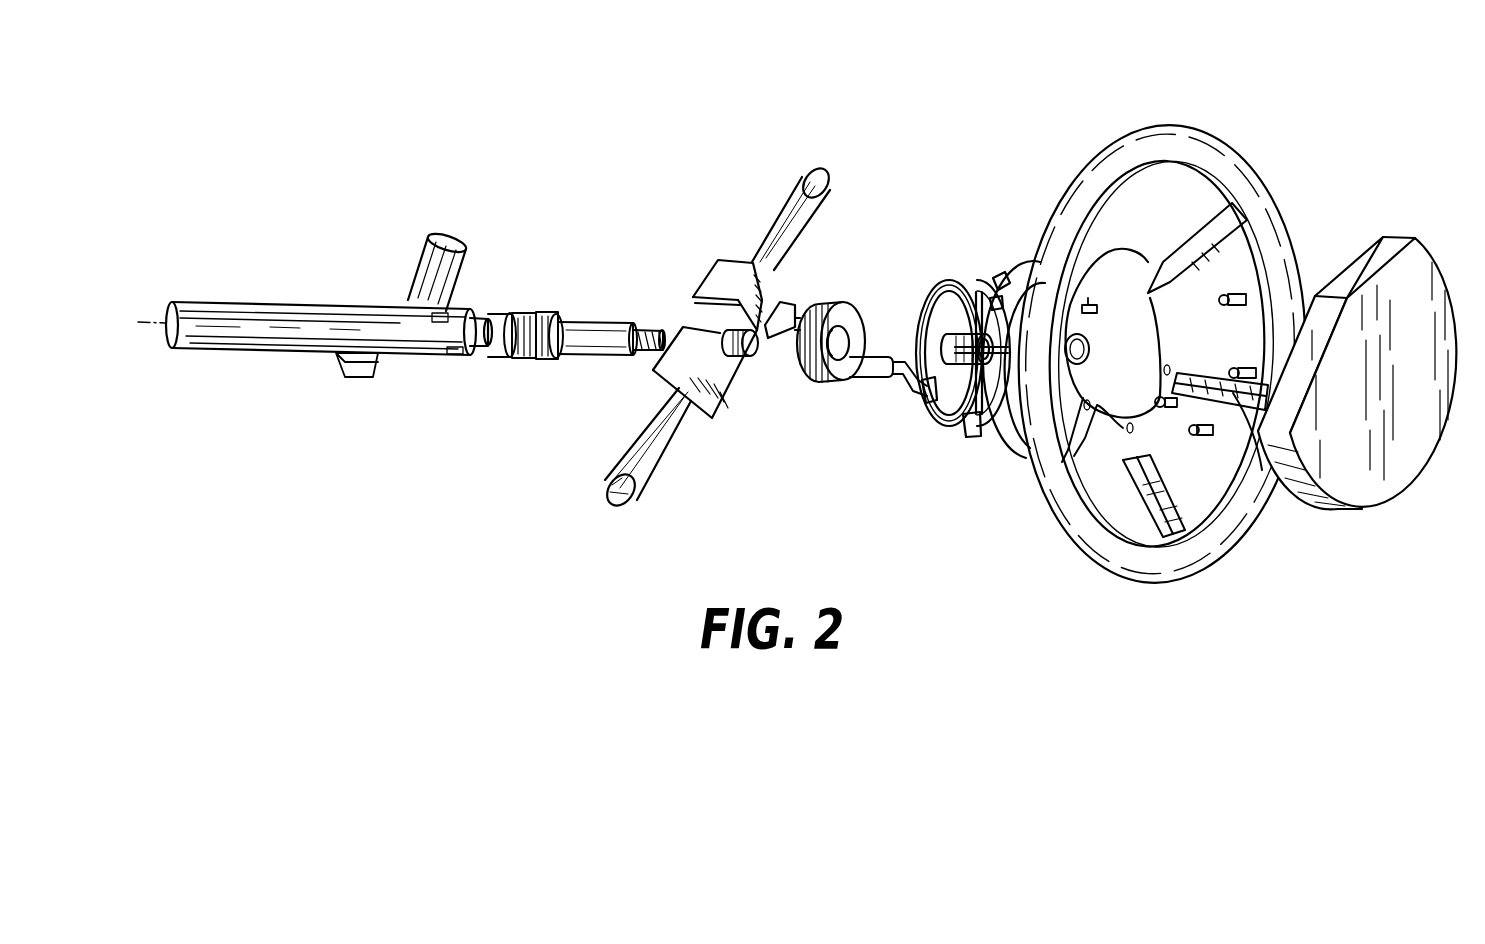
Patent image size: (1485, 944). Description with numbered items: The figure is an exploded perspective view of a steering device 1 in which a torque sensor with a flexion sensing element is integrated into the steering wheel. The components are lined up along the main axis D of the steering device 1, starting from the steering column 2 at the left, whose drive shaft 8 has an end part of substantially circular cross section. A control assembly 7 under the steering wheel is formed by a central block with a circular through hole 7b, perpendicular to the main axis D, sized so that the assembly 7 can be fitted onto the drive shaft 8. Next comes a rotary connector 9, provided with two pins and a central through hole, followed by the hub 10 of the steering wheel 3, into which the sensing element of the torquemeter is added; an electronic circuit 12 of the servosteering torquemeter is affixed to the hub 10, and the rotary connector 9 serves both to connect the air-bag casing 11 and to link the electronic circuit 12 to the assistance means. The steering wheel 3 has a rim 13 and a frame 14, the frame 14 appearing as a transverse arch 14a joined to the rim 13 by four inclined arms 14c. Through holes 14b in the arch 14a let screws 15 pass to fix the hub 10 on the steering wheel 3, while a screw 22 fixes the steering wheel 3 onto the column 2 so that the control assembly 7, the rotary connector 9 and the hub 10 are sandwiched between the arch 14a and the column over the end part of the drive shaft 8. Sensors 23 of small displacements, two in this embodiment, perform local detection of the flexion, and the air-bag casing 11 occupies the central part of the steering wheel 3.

The steering device 1 is at (671, 153).
The main axis D is at (315, 342).
The steering column 2 is at (255, 340).
The drive shaft 8 is at (592, 362).
The control assembly 7 is at (717, 337).
The through hole 7b is at (752, 357).
The rotary connector 9 is at (843, 315).
The hub 10 is at (946, 426).
The electronic circuit 12 is at (1023, 407).
The steering wheel 3 is at (1159, 351).
The screw 22 is at (1116, 355).
The sensors 23 is at (1087, 297).
The rim 13 is at (1231, 188).
The frame 14 is at (1238, 249).
The transverse arch 14a is at (1150, 315).
The through holes 14b is at (1183, 248).
The inclined arms 14c is at (1183, 503).
The screws 15 is at (1250, 296).
The air-bag casing 11 is at (1388, 337).